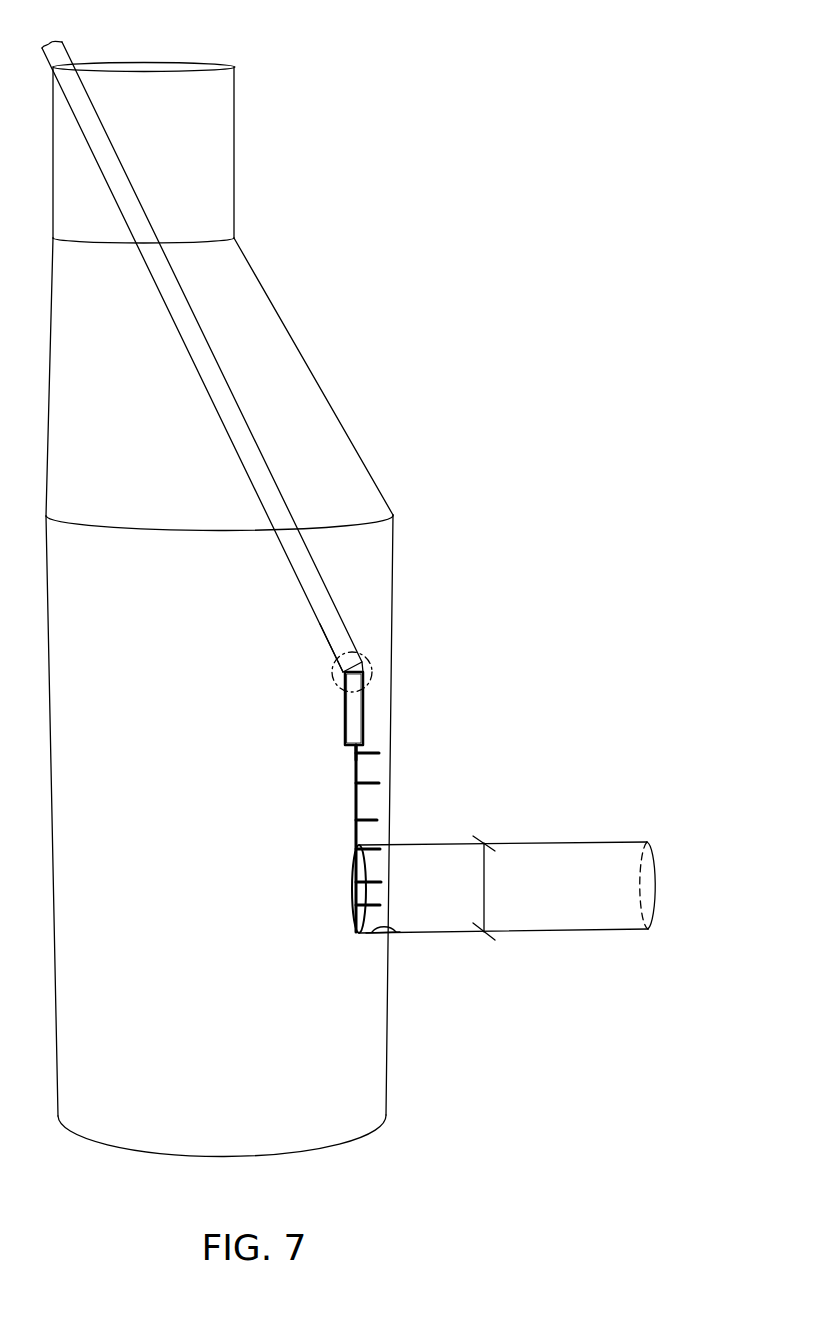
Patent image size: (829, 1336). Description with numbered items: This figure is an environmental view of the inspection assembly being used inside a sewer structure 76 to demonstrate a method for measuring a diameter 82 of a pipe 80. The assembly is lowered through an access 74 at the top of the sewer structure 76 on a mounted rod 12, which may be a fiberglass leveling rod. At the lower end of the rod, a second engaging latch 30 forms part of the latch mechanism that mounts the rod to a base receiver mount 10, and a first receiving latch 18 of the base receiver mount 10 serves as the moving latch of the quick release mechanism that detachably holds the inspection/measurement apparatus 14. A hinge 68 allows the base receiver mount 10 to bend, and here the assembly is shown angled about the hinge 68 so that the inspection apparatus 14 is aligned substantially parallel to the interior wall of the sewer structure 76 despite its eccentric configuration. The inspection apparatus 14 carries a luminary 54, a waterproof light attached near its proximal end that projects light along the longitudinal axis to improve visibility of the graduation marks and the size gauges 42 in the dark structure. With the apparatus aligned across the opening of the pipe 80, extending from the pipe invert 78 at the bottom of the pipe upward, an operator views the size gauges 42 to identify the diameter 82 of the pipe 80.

The access 74 is at (145, 68).
The sewer structure 76 is at (331, 347).
The mounted rod 12 is at (247, 443).
The second engaging latch 30 is at (330, 628).
The hinge 68 is at (373, 668).
The base receiver mount 10 is at (355, 710).
The first receiving latch 18 is at (354, 735).
The inspection/measurement apparatus 14 is at (353, 808).
The luminary 54 is at (353, 748).
The size gauges 42 is at (378, 782).
The pipe 80 is at (577, 857).
The diameter 82 is at (487, 885).
The pipe invert 78 is at (396, 934).